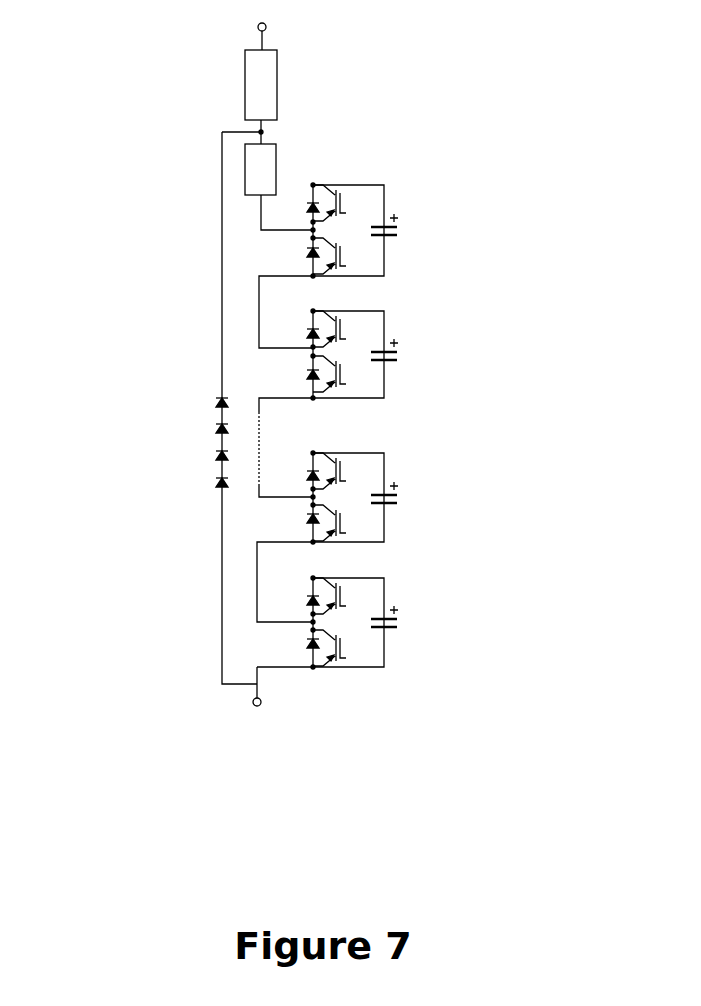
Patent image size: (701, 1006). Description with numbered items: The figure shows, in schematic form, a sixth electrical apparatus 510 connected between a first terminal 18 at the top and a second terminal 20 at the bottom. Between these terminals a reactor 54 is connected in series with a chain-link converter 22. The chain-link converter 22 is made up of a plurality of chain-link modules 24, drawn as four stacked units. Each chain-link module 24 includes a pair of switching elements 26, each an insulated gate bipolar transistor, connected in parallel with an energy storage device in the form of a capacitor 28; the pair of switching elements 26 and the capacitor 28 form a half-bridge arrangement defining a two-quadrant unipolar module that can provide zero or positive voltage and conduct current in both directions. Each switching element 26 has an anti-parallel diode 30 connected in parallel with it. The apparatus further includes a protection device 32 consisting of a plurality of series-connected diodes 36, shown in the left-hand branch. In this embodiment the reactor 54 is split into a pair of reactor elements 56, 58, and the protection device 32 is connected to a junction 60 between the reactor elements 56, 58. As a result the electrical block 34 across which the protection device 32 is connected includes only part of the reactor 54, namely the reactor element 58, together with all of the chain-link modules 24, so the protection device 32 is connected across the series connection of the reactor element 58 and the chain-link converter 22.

The sixth electrical apparatus 510 is at (367, 86).
The first terminal 18 is at (257, 25).
The second terminal 20 is at (252, 706).
The chain-link converter 22 is at (346, 732).
The chain-link module 24 is at (371, 433).
The switching element 26 is at (338, 190).
The capacitor 28 is at (404, 233).
The anti-parallel diode 30 is at (305, 209).
The protection device 32 is at (149, 408).
The electrical block 34 is at (402, 433).
The series-connected diodes 36 is at (212, 496).
The reactor 54 is at (248, 122).
The reactor element 56 is at (261, 85).
The reactor element 58 is at (260, 169).
The junction 60 is at (272, 133).